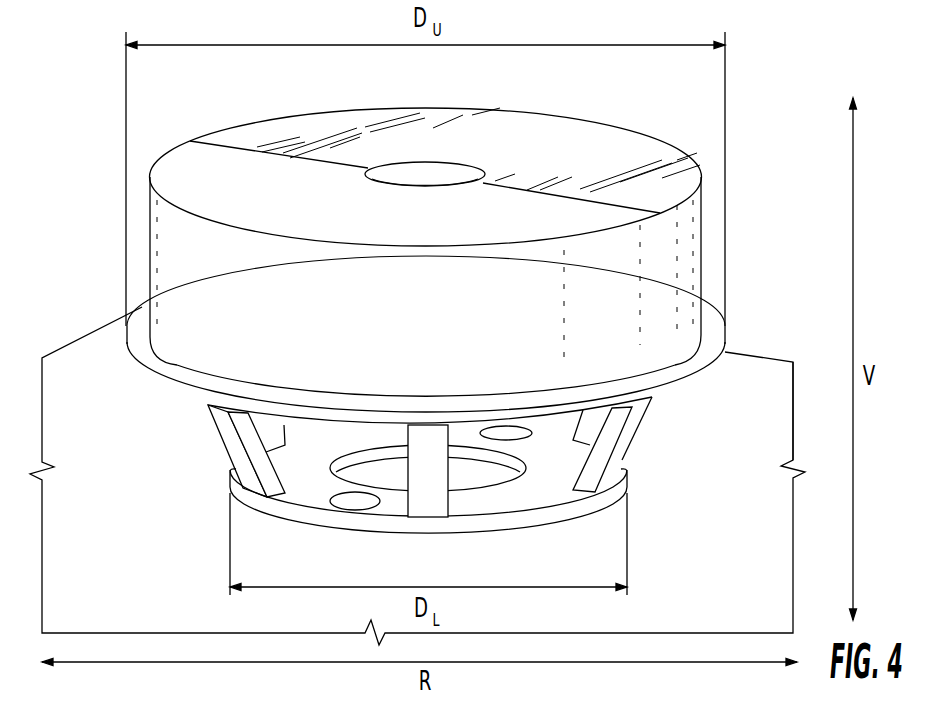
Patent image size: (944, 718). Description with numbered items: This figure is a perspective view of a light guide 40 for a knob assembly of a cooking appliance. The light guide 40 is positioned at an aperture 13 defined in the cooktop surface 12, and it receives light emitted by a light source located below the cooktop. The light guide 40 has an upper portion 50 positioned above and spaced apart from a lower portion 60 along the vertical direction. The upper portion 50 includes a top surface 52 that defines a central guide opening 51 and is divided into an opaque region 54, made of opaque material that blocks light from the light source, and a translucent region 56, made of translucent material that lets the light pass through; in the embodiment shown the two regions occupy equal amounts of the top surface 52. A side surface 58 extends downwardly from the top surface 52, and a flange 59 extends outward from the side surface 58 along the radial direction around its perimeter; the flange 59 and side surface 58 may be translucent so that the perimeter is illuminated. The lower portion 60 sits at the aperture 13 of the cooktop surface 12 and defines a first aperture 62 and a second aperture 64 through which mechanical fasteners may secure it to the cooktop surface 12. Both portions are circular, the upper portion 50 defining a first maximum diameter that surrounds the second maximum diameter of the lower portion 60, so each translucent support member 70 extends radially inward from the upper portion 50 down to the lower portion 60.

The cooktop surface 12 is at (725, 583).
The aperture 13 is at (429, 509).
The light guide 40 is at (773, 470).
The upper portion 50 is at (380, 445).
The guide opening 51 is at (465, 129).
The top surface 52 is at (381, 236).
The opaque region 54 is at (555, 157).
The translucent region 56 is at (269, 207).
The side surface 58 is at (384, 333).
The flange 59 is at (393, 306).
The lower portion 60 is at (428, 525).
The first aperture 62 is at (276, 529).
The second aperture 64 is at (534, 500).
The support member 70 is at (440, 467).